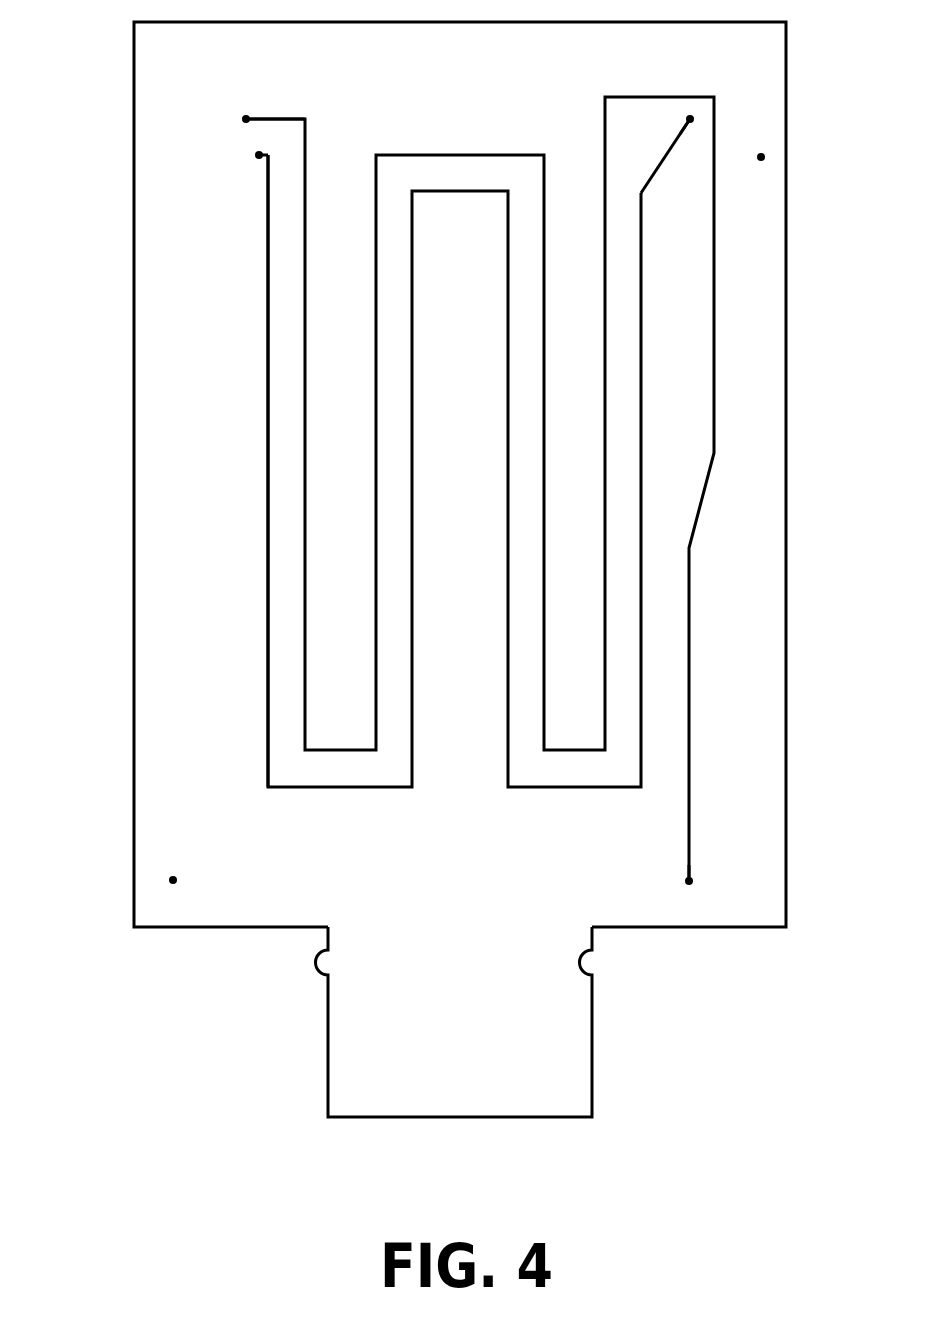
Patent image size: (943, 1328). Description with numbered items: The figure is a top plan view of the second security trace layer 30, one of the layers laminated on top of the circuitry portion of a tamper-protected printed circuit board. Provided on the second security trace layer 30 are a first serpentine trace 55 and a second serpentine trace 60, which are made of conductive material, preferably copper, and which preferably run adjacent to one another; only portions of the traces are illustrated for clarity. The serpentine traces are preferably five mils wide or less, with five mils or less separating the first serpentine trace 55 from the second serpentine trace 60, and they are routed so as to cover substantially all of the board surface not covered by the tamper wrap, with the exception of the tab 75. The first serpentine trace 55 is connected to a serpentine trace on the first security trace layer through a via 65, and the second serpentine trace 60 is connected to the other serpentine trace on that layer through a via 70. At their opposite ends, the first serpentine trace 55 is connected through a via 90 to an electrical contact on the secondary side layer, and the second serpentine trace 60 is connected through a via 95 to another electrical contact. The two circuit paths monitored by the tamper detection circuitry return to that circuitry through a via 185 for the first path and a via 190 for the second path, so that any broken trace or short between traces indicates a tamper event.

The second security trace layer 30 is at (787, 472).
The first serpentine trace 55 is at (283, 117).
The second serpentine trace 60 is at (268, 367).
The via 65 is at (246, 112).
The via 70 is at (258, 155).
The tab 75 is at (592, 1013).
The via 90 is at (689, 882).
The via 95 is at (690, 112).
The via 185 is at (173, 880).
The via 190 is at (761, 157).